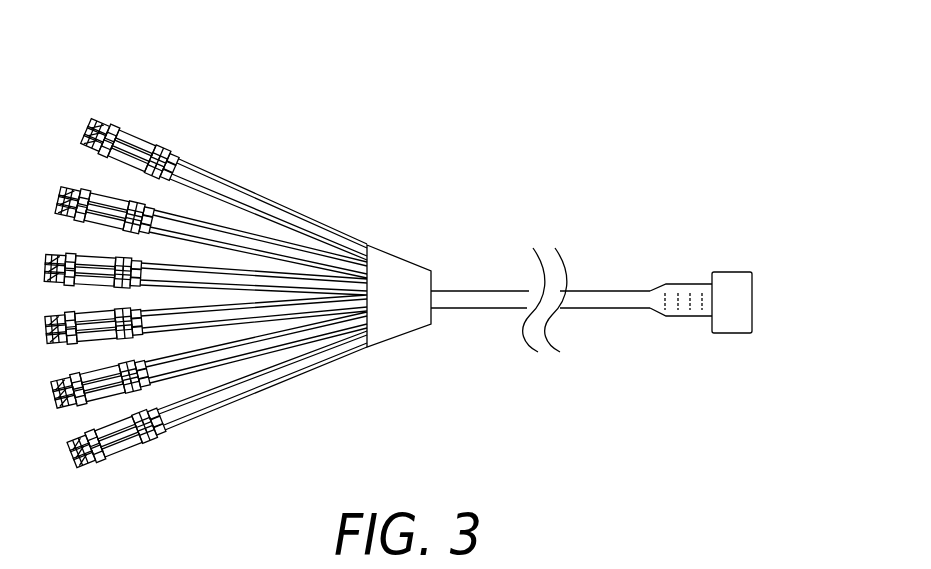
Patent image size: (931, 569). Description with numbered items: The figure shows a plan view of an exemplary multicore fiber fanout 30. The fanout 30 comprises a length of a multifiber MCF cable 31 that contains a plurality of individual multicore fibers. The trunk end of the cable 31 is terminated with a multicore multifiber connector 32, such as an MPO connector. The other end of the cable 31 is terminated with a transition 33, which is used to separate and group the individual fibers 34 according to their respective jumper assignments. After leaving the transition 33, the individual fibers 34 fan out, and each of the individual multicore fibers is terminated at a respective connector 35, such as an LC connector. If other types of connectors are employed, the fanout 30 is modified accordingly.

The MCF fanout 30 is at (405, 80).
The multifiber MCF cable 31 is at (590, 292).
The multicore multifiber connector 32 is at (740, 307).
The transition 33 is at (400, 277).
The individual fibers 34 is at (287, 198).
The connectors 35 is at (82, 121).